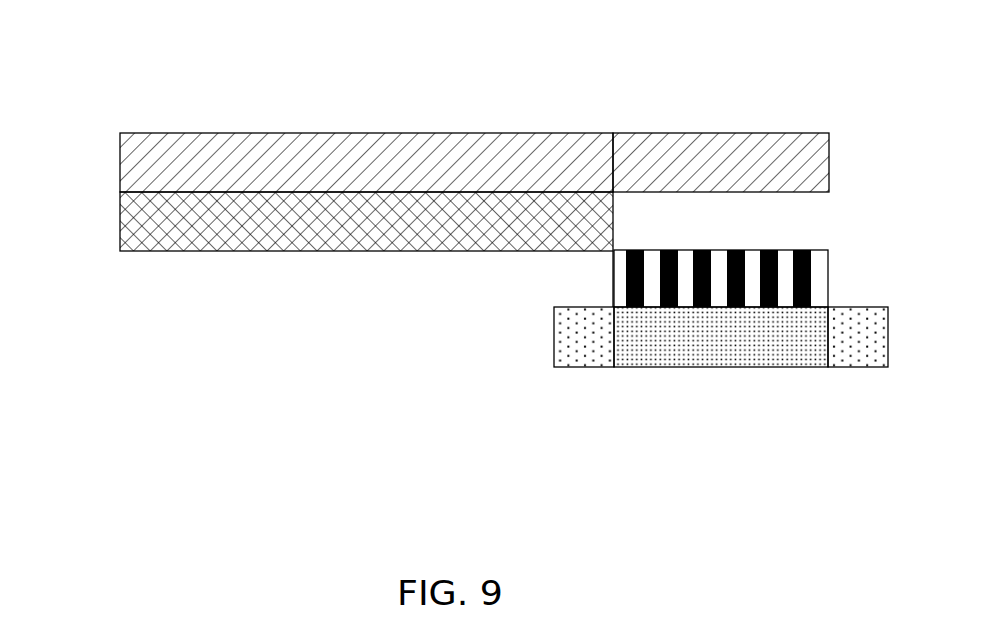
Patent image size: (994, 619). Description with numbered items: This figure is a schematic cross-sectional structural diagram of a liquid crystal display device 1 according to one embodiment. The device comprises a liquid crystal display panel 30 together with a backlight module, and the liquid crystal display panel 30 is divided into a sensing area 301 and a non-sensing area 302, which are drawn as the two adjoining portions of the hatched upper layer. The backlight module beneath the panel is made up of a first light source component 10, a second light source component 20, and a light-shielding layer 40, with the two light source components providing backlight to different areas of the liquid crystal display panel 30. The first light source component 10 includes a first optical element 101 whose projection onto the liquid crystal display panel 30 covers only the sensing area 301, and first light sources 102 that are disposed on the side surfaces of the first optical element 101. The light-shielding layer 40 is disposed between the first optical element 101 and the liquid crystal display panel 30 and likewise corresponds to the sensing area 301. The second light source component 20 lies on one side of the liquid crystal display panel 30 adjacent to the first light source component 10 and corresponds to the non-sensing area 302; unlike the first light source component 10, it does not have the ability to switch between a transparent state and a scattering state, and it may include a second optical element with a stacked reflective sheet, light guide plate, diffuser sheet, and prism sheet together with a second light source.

The liquid crystal display device 1 is at (463, 43).
The first light source component 10 is at (721, 403).
The first optical element 101 is at (721, 374).
The first light sources 102 is at (847, 343).
The second light source component 20 is at (153, 222).
The liquid crystal display panel 30 is at (474, 112).
The sensing area 301 is at (721, 139).
The non-sensing area 302 is at (533, 162).
The light-shielding layer 40 is at (813, 282).